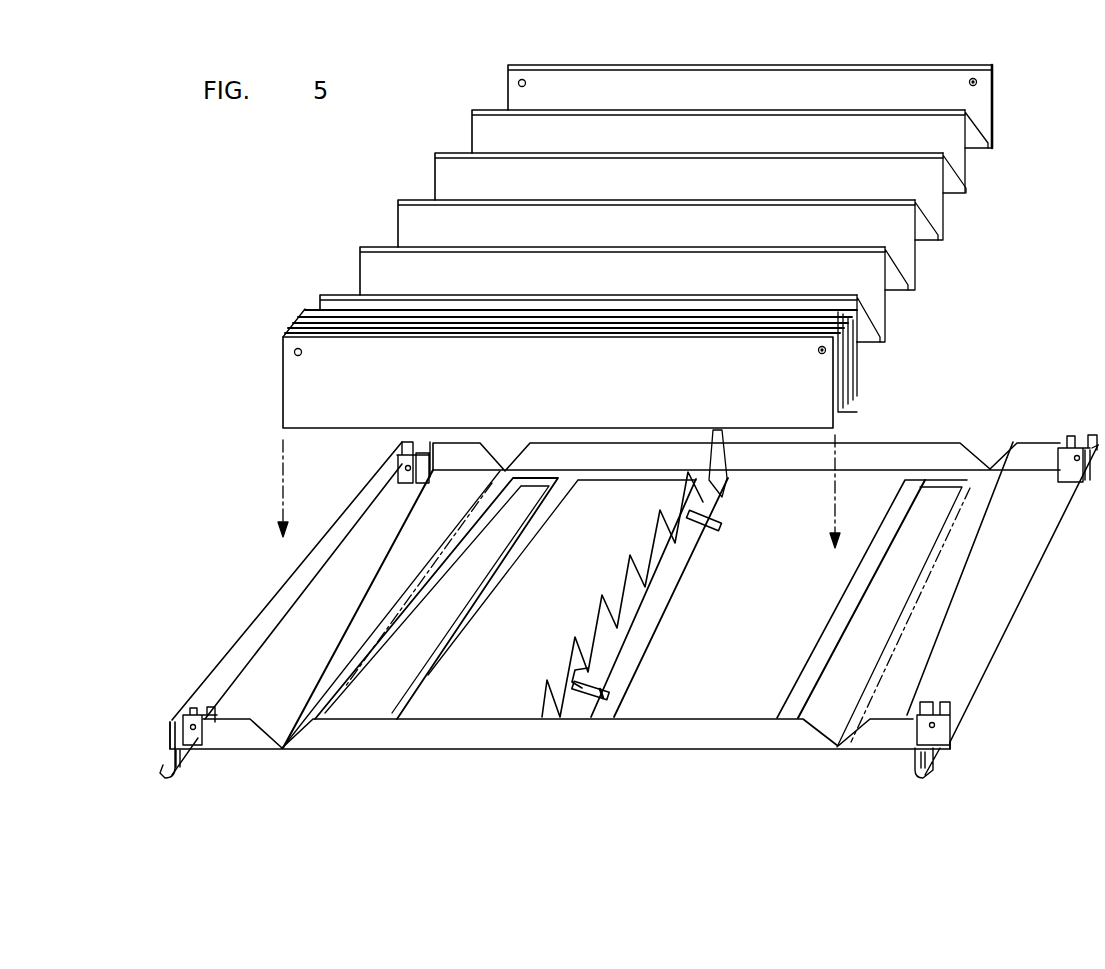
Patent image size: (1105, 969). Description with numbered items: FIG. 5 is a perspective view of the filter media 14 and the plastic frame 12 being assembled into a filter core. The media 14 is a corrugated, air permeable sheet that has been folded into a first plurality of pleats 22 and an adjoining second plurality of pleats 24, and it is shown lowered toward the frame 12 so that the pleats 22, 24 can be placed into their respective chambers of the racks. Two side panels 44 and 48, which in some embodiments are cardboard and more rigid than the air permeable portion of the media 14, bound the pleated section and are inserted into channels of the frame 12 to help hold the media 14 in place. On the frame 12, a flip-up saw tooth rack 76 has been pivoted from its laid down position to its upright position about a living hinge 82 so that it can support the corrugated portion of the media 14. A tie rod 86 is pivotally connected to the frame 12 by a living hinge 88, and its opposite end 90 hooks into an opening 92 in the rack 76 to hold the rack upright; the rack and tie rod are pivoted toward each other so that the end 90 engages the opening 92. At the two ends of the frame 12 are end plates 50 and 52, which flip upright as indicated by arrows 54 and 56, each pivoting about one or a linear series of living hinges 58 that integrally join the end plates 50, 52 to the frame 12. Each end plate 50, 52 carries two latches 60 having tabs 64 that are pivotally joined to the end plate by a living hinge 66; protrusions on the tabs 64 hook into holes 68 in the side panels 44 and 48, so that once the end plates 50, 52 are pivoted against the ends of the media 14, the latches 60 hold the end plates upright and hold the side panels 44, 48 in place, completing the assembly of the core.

The plastic frame 12 is at (238, 616).
The air permeable filter media 14 is at (948, 332).
The first plurality of pleats 22 is at (873, 384).
The second plurality of pleats 24 is at (897, 342).
The side panel 44 is at (318, 383).
The side panel 48 is at (900, 83).
The end plate 50 is at (265, 668).
The end plate 52 is at (957, 635).
The arrow 54 is at (410, 522).
The arrow 56 is at (915, 518).
The living hinge 58 is at (343, 688).
The latch 60 is at (214, 760).
The tab 64 is at (163, 775).
The living hinge 66 is at (205, 750).
The hole 68 is at (978, 82).
The saw tooth rack 76 is at (602, 601).
The living hinge 82 is at (645, 607).
The tie rod 86 is at (604, 686).
The living hinge 88 is at (607, 701).
The tie rod end 90 is at (697, 514).
The opening 92 is at (573, 678).